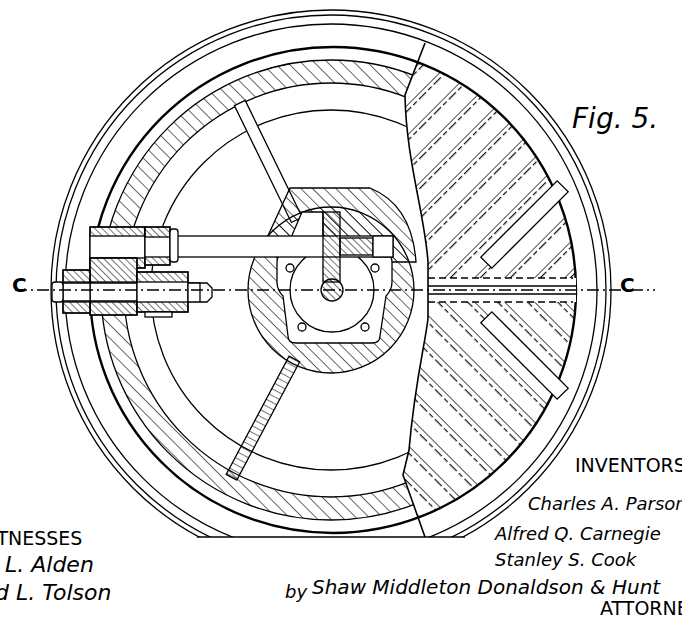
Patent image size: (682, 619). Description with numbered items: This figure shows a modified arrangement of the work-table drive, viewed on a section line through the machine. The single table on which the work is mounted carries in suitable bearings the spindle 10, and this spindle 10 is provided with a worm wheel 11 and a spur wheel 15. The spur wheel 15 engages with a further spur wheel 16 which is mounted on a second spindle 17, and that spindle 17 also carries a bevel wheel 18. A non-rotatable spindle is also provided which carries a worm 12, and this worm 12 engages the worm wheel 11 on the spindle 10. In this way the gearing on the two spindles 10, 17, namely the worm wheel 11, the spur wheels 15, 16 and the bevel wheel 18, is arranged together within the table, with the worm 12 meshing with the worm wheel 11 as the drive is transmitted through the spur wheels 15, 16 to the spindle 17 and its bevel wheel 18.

The spindle 10 is at (243, 236).
The worm wheel 11 is at (347, 214).
The worm 12 is at (332, 280).
The spur wheel 15 is at (165, 231).
The spur wheel 16 is at (165, 312).
The spindle 17 is at (140, 318).
The bevel wheel 18 is at (75, 320).